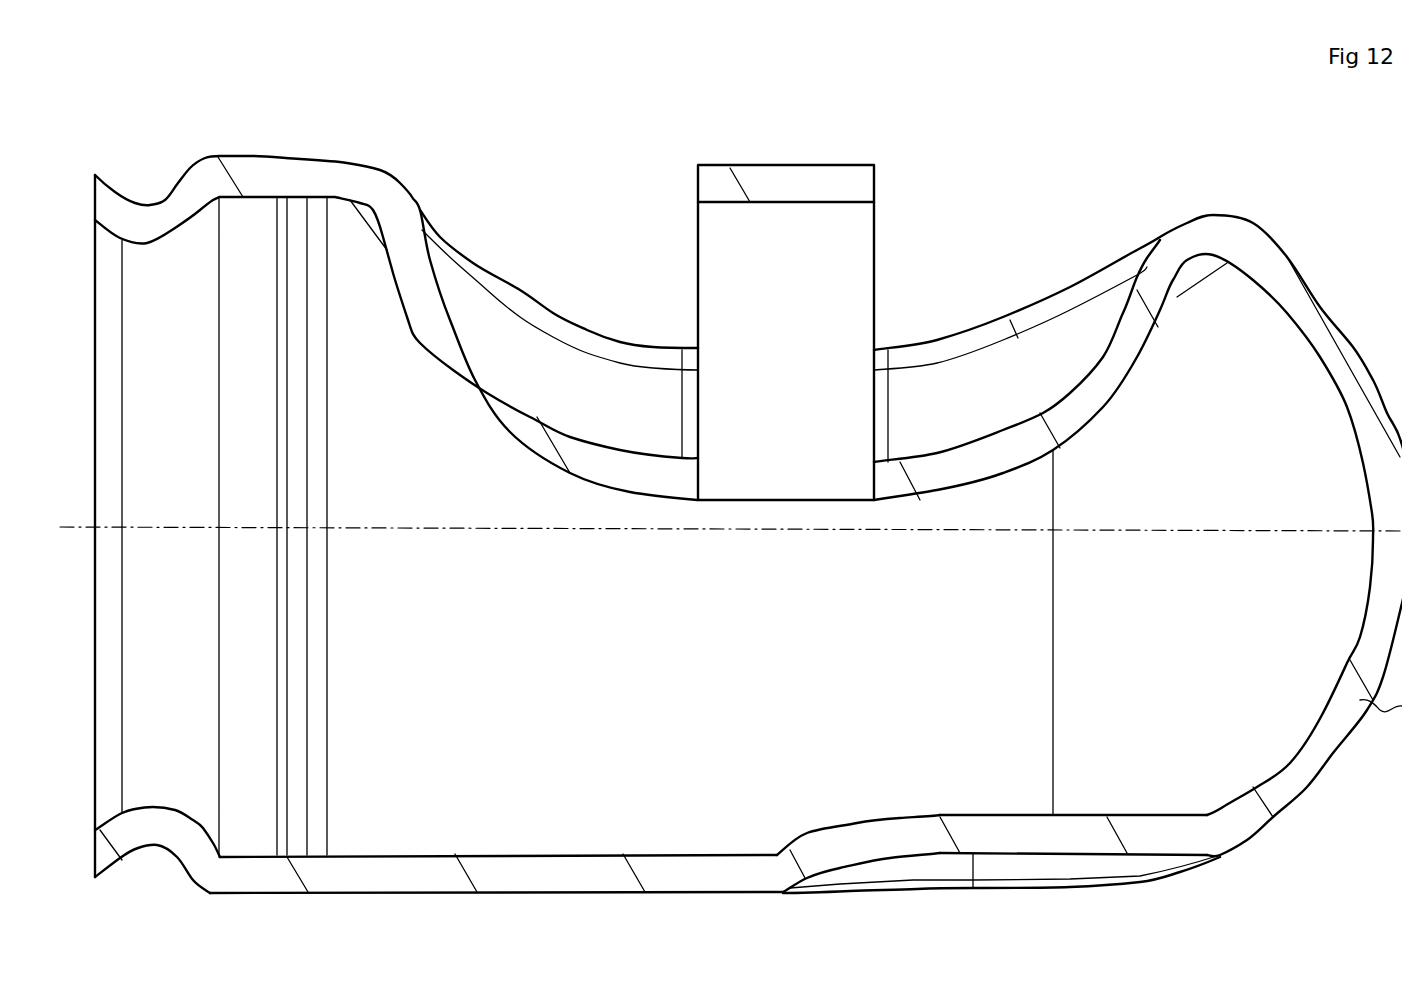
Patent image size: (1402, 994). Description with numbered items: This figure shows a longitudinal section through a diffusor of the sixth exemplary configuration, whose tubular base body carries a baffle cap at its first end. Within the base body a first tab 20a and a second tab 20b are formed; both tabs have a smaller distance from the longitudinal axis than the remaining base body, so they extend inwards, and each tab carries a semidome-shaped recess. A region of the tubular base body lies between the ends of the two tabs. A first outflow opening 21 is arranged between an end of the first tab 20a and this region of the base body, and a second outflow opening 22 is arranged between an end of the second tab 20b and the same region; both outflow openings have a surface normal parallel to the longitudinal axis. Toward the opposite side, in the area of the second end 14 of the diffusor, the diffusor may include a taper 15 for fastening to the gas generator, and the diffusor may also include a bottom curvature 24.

The second end 14 is at (84, 447).
The taper 15 is at (157, 877).
The first tab 20a is at (1072, 328).
The second tab 20b is at (608, 366).
The first outflow opening 21 is at (880, 265).
The second outflow opening 22 is at (692, 268).
The bottom curvature 24 is at (1127, 870).